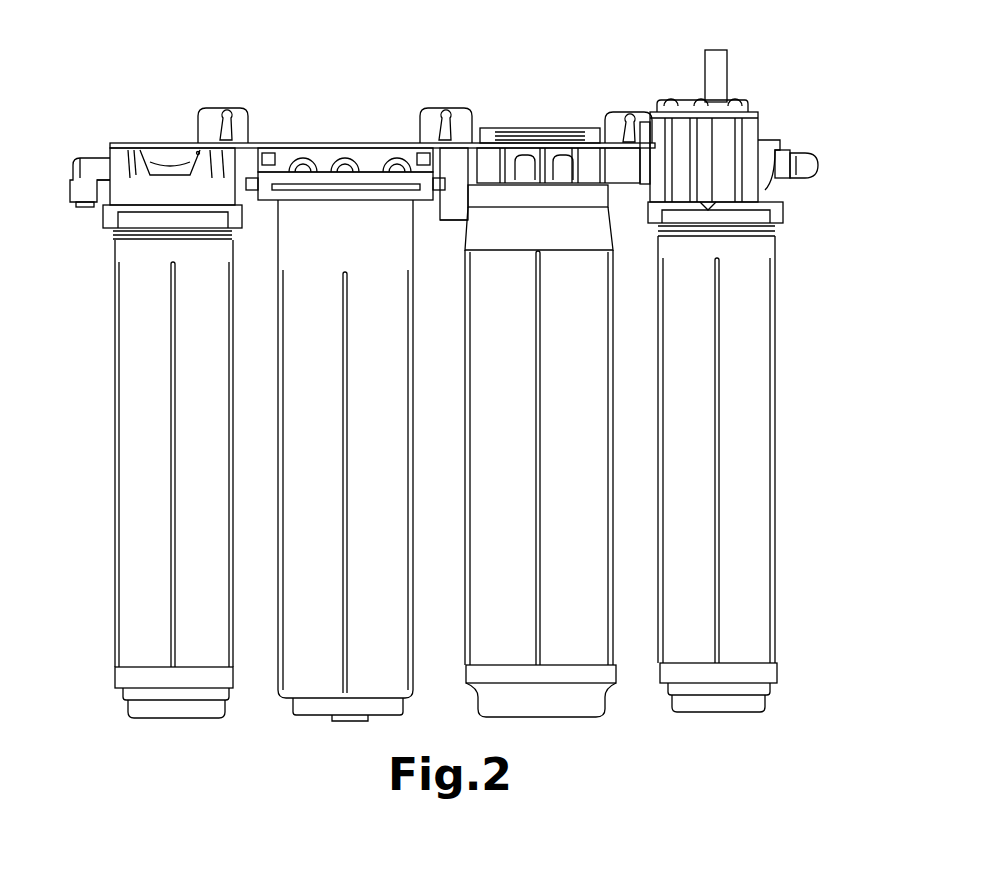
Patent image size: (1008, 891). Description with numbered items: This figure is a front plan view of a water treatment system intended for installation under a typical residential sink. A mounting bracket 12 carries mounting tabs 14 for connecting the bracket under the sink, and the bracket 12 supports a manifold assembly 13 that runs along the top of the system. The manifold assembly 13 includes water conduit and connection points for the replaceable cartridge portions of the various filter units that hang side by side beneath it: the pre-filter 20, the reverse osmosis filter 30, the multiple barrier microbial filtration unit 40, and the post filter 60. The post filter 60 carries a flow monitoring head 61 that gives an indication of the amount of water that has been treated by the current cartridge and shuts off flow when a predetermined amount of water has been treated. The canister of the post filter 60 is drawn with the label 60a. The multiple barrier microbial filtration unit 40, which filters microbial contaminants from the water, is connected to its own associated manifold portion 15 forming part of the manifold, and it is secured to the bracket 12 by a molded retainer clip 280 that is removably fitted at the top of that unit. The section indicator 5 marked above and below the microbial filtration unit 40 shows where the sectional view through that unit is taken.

The mounting bracket 12 is at (150, 145).
The manifold assembly 13 is at (125, 162).
The mounting tabs 14 is at (243, 132).
The manifold portion 15 is at (557, 167).
The pre-filter 20 is at (163, 500).
The reverse osmosis filter 30 is at (330, 500).
The multiple barrier microbial filtration unit 40 is at (518, 500).
The post filter 60 is at (818, 322).
The fourth filter canister 60a is at (771, 497).
The flow monitoring head 61 is at (715, 158).
The retainer clip 280 is at (515, 130).
The section line 5- 5 is at (572, 107).